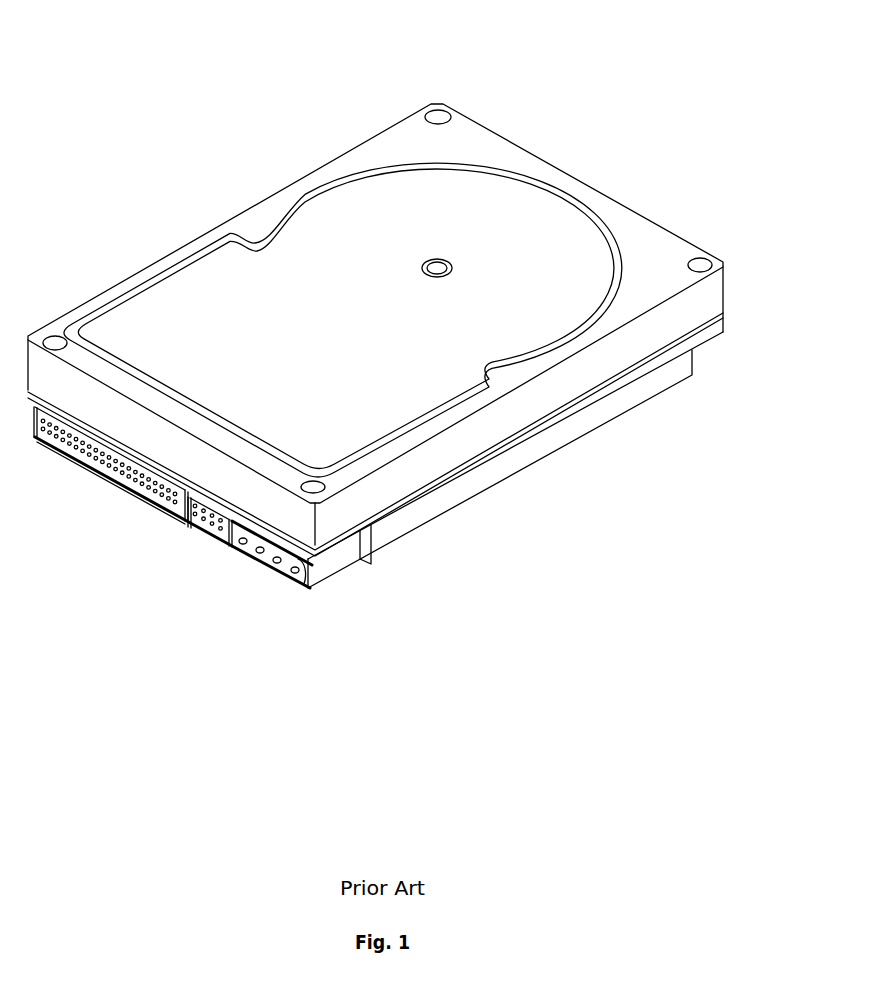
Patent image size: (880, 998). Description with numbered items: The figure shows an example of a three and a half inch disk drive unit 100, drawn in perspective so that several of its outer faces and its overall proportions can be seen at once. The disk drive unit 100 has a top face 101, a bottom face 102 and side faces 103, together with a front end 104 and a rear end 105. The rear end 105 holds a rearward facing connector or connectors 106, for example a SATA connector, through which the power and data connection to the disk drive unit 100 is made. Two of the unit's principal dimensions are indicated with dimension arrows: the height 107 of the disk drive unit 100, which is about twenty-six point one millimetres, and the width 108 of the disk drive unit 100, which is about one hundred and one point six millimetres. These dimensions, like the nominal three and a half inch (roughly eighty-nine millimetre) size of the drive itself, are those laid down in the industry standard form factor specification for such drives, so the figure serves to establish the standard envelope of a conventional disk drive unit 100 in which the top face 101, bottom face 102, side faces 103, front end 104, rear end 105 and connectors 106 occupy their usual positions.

The disk drive unit 100 is at (713, 38).
The top face 101 is at (355, 242).
The bottom face 102 is at (515, 533).
The side faces 103 is at (178, 243).
The front end 104 is at (652, 213).
The rear end 105 is at (228, 480).
The connector 106 is at (128, 493).
The height 107 is at (747, 260).
The width 108 is at (506, 47).